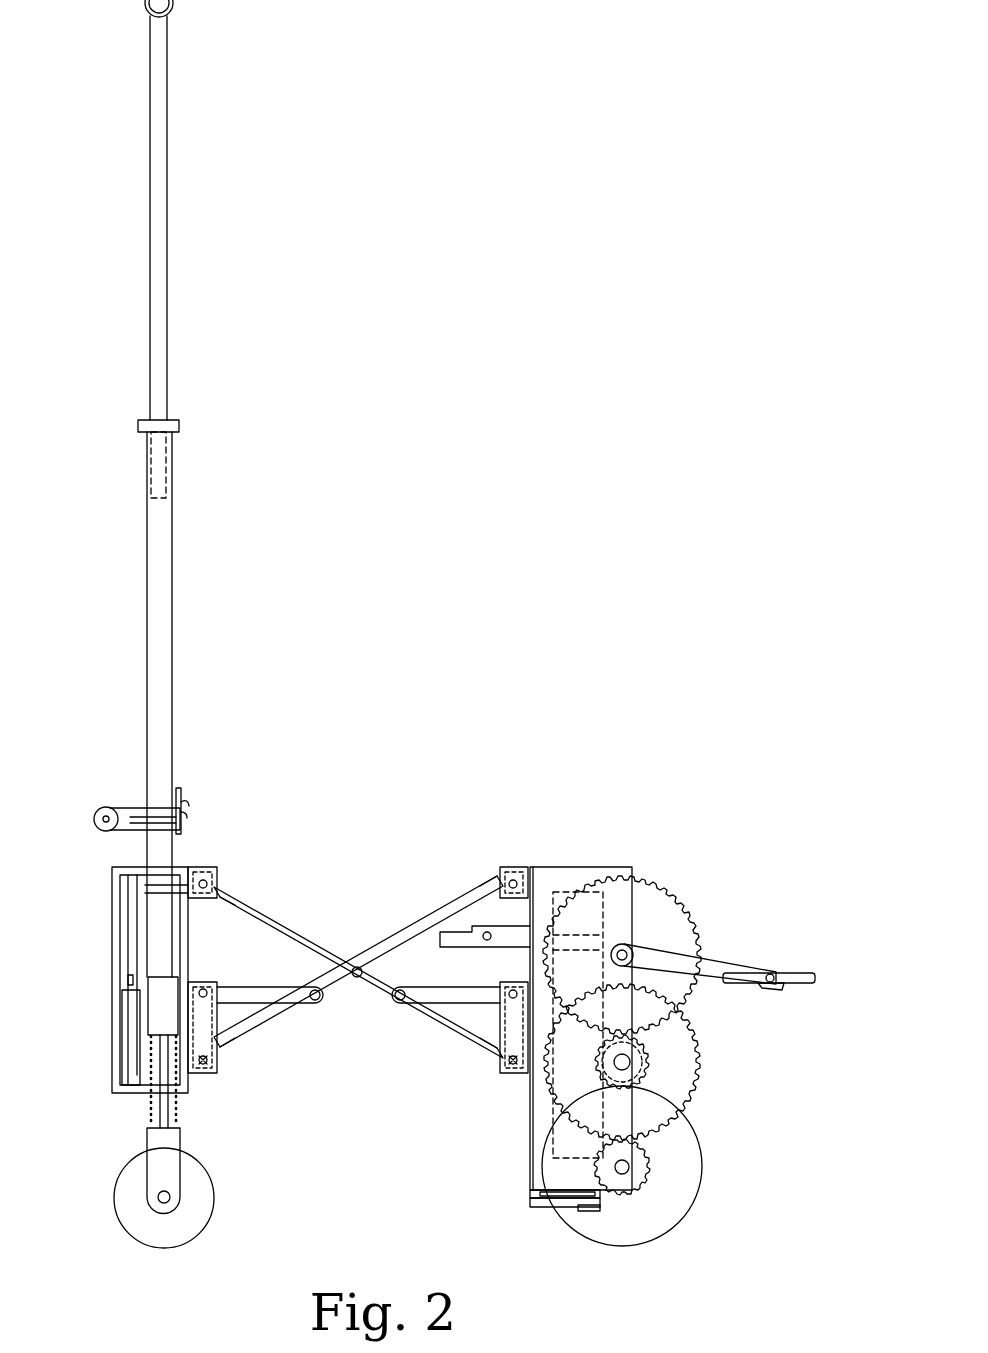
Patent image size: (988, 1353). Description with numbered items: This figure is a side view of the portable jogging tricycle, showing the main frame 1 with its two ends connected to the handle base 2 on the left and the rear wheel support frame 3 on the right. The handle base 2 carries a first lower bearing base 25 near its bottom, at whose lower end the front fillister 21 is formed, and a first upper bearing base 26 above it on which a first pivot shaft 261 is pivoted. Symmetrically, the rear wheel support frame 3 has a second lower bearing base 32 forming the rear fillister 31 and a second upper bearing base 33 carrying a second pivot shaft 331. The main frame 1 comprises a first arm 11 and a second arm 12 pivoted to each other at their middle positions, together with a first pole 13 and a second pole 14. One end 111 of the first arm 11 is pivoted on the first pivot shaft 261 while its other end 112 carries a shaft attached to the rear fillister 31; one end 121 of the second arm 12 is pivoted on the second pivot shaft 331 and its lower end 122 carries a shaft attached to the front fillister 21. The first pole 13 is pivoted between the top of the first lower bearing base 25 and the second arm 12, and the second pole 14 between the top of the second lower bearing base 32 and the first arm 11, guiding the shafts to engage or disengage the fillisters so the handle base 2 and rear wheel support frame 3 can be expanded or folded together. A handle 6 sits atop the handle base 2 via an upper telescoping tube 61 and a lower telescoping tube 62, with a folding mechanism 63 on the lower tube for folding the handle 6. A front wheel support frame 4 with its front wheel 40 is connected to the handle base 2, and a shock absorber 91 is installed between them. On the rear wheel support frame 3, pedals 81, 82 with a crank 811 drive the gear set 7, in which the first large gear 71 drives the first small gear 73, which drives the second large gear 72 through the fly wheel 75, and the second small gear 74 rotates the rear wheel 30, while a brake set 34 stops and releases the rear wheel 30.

The main frame 1 is at (358, 972).
The first arm 11 is at (326, 950).
The end of first arm 111 is at (232, 892).
The end of first arm 112 is at (490, 1053).
The second arm 12 is at (389, 955).
The end of second arm 121 is at (489, 892).
The end of second arm 122 is at (233, 1050).
The first pole 13 is at (254, 998).
The second pole 14 is at (464, 1000).
The handle base 2 is at (180, 956).
The front fillister 21 is at (214, 1075).
The first lower bearing base 25 is at (202, 982).
The first upper bearing base 26 is at (206, 867).
The first pivot shaft 261 is at (208, 882).
The rear wheel support frame 3 is at (591, 867).
The rear wheel 30 is at (672, 1207).
The rear fillister 31 is at (502, 1073).
The second lower bearing base 32 is at (518, 982).
The second upper bearing base 33 is at (517, 867).
The second pivot shaft 331 is at (511, 880).
The brake set 34 is at (590, 1208).
The front wheel support frame 4 is at (112, 907).
The front wheel 40 is at (136, 1180).
The handle 6 is at (148, 10).
The upper telescoping tube 61 is at (162, 252).
The lower telescoping tube 62 is at (161, 592).
The folding mechanism 63 is at (118, 808).
The gear set 7 is at (682, 1006).
The first large gear 71 is at (660, 880).
The second large gear 72 is at (700, 1082).
The first small gear 73 is at (650, 1062).
The second small gear 74 is at (651, 1167).
The fly wheel 75 is at (645, 1080).
The pedal 81 is at (796, 972).
The crank 811 is at (725, 968).
The pedal 82 is at (463, 929).
The shock absorber 91 is at (158, 1003).